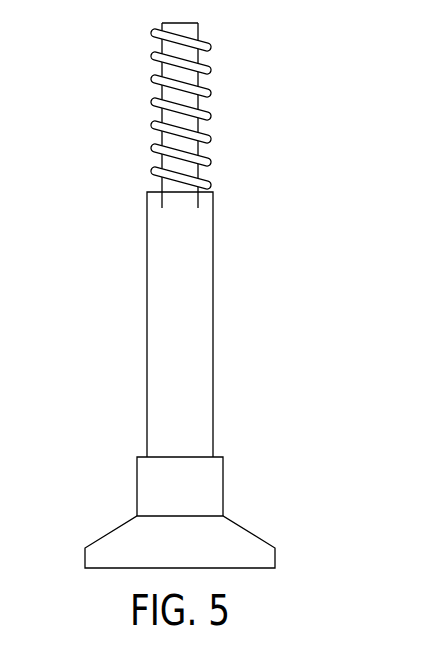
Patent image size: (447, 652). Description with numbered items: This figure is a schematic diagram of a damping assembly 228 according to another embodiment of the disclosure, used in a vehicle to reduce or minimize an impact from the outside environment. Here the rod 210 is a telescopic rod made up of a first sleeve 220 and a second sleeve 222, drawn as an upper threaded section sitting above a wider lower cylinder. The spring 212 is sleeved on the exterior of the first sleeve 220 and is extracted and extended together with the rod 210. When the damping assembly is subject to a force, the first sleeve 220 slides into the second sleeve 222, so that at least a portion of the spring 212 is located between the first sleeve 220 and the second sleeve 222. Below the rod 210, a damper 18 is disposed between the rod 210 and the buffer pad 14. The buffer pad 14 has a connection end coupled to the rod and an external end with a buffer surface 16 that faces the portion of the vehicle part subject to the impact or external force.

The damping assembly 228 is at (252, 135).
The spring 212 is at (215, 115).
The first sleeve 220 is at (190, 172).
The rod 210 is at (213, 308).
The second sleeve 222 is at (200, 369).
The damper 18 is at (200, 477).
The buffer pad 14 is at (245, 531).
The buffer surface 16 is at (247, 568).